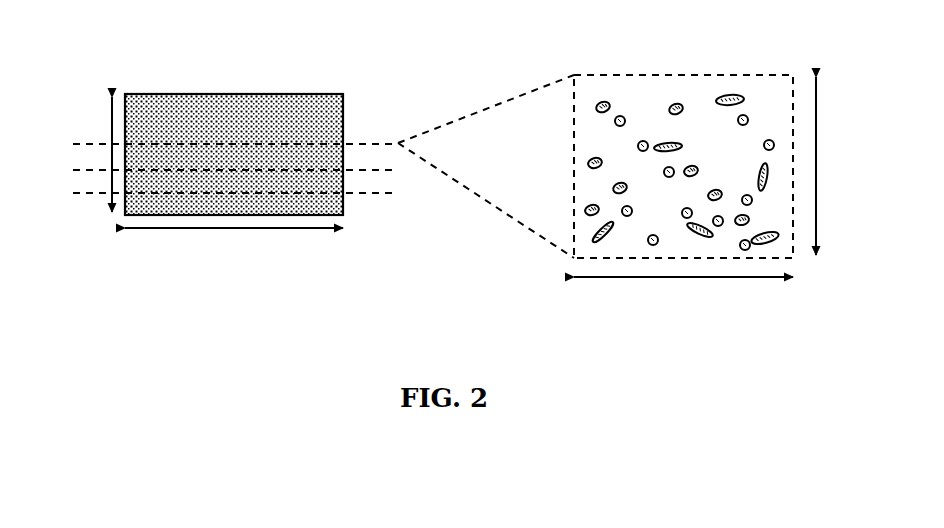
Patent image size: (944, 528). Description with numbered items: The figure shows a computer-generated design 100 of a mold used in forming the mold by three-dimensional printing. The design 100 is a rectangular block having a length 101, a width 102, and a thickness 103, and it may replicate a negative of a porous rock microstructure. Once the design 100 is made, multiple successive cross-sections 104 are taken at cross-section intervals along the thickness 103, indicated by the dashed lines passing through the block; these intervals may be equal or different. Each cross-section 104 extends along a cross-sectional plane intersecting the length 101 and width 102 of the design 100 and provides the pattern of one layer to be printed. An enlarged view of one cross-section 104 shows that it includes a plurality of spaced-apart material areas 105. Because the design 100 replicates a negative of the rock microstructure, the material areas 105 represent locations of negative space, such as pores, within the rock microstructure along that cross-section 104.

The computer-generated design 100 is at (297, 94).
The length 101 is at (839, 166).
The width 102 is at (459, 268).
The thickness 103 is at (89, 149).
The cross-section 104 is at (365, 144).
The material areas 105 is at (620, 116).